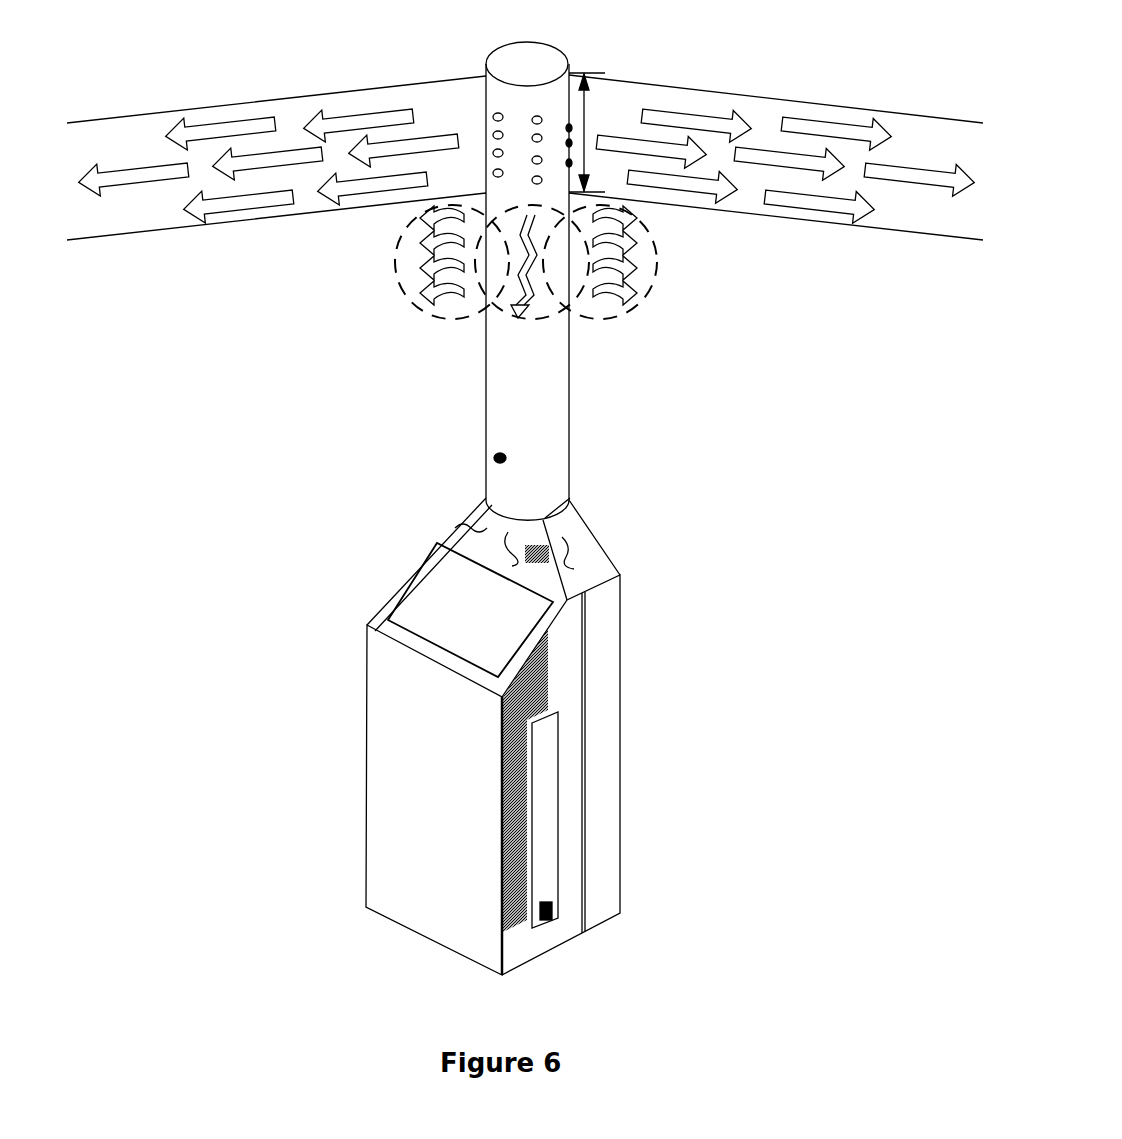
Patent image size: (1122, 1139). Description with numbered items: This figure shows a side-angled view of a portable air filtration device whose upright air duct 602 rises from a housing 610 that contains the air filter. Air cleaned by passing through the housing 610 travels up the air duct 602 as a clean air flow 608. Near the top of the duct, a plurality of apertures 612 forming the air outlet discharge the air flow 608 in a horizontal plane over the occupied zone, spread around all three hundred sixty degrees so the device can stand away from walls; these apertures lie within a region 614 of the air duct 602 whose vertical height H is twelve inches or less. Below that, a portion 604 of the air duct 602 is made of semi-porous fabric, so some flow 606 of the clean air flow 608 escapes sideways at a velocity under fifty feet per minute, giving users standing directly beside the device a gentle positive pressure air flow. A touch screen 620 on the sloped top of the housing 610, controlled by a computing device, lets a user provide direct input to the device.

The air duct 602 is at (550, 385).
The portion of the air duct 604 is at (545, 257).
The some flow 606 is at (603, 315).
The air flow 608 is at (382, 113).
The housing 610 is at (397, 793).
The plurality of apertures 612 is at (567, 110).
The region of the air duct 614 is at (465, 117).
The touch screen 620 is at (462, 607).